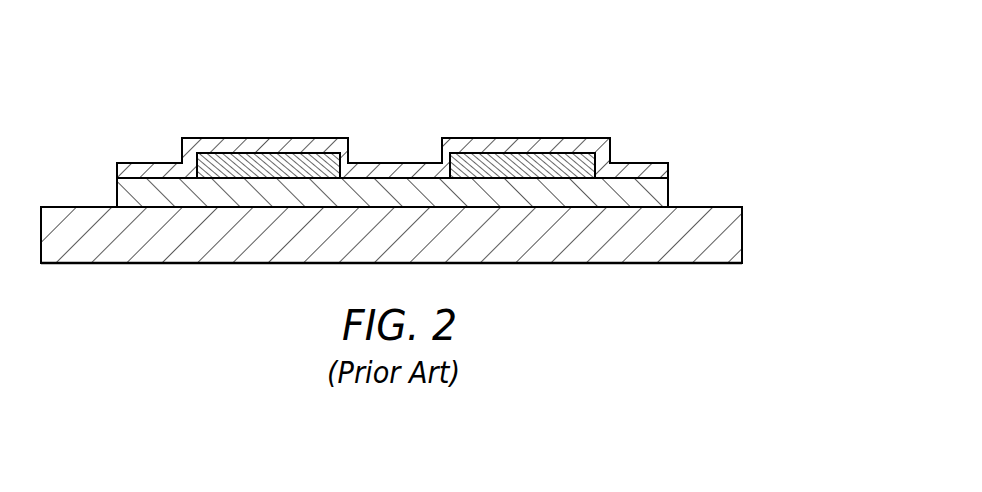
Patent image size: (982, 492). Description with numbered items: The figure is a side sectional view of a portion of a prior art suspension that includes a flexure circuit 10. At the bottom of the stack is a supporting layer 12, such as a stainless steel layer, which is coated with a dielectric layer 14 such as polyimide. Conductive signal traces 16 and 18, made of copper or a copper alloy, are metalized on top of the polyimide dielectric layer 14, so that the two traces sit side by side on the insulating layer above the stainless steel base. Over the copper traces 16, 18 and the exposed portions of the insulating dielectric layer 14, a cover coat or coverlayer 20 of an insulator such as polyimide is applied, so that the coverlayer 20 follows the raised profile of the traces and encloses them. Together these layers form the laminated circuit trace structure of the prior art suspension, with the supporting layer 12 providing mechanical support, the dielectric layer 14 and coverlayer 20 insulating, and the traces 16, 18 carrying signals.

The flexure circuit 10 is at (505, 60).
The supporting layer 12 is at (573, 263).
The dielectric layer 14 is at (668, 188).
The conductive signal trace 16 is at (572, 163).
The conductive signal trace 18 is at (305, 163).
The coverlayer 20 is at (635, 165).